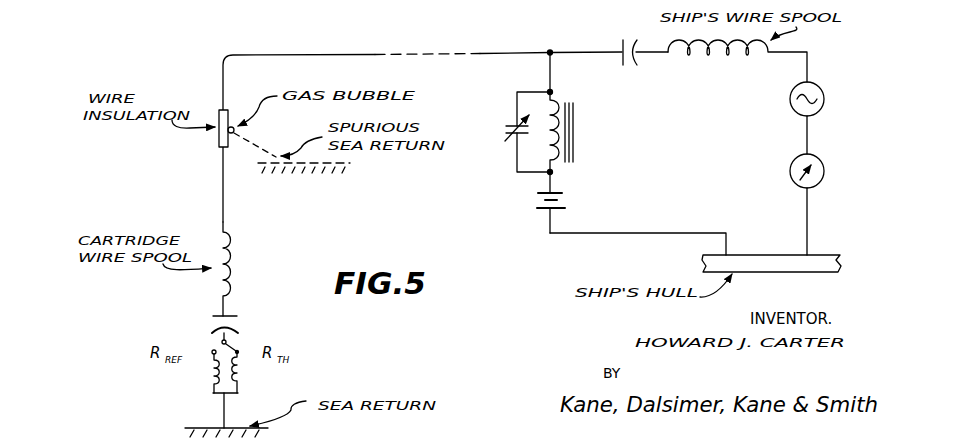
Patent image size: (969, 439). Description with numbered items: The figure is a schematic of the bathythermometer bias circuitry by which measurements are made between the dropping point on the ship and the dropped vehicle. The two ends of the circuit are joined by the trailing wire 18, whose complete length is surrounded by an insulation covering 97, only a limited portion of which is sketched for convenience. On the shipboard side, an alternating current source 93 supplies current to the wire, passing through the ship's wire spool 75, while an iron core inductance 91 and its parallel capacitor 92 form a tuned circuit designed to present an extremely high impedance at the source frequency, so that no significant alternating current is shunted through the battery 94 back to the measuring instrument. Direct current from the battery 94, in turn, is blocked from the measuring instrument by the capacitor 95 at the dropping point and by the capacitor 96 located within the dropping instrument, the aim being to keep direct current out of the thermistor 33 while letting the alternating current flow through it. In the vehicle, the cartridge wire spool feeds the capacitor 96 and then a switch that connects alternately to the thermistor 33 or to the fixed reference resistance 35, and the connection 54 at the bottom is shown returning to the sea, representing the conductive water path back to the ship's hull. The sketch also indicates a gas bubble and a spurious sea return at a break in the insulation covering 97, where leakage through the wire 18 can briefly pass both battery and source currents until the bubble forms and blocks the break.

The wire 18 is at (347, 53).
The insulation covering 97 is at (218, 146).
The capacitor 96 is at (233, 316).
The thermistor 33 is at (240, 369).
The resistance 35 is at (212, 370).
The connecting point 54 is at (222, 411).
The capacitor 92 is at (513, 142).
The iron core inductance 91 is at (575, 130).
The battery 94 is at (565, 198).
The capacitor 95 is at (623, 44).
The wire spool 75 is at (719, 57).
The alternating current source 93 is at (790, 104).